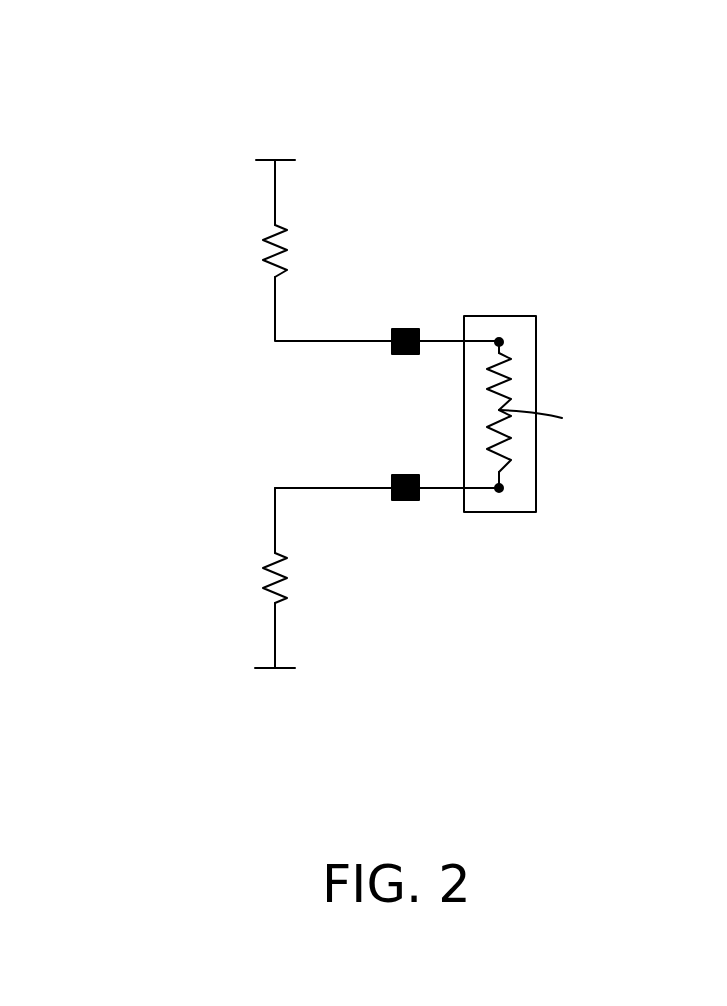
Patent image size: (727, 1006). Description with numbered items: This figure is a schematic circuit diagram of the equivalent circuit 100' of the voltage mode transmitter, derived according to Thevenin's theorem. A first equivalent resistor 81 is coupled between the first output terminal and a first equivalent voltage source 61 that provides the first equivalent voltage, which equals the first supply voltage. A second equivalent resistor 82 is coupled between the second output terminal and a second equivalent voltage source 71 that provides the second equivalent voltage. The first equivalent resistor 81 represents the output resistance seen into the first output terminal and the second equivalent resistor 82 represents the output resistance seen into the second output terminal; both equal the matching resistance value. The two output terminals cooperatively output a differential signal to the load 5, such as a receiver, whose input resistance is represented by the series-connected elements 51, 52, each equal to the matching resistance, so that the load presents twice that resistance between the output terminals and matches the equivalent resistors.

The equivalent circuit 100' is at (328, 371).
The first equivalent voltage source 61 is at (260, 159).
The second equivalent voltage source 71 is at (258, 669).
The first equivalent resistor 81 is at (265, 244).
The second equivalent resistor 82 is at (262, 573).
The load 5 is at (535, 411).
The input resistance element 51 is at (507, 388).
The input resistance element 52 is at (508, 448).